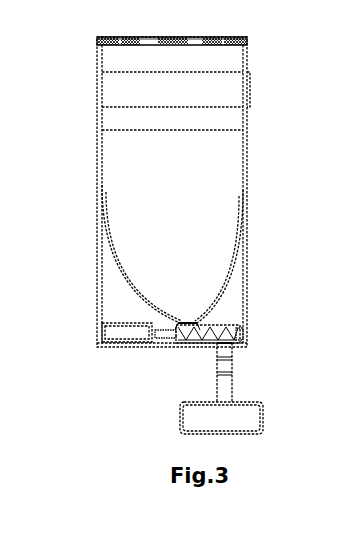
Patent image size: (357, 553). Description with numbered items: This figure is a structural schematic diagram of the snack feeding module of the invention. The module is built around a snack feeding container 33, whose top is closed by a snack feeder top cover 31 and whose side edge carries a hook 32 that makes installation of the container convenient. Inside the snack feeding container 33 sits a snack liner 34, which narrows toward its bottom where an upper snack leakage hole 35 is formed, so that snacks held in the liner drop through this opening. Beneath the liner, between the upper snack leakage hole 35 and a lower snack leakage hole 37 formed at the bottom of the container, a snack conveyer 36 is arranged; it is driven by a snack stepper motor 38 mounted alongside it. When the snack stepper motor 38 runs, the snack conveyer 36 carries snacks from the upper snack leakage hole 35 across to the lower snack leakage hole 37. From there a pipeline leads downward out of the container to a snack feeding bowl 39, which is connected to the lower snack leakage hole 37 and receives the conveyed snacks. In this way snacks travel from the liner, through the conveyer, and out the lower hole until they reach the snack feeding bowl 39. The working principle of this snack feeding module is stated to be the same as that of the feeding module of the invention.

The snack feeder top cover 31 is at (245, 48).
The hook 32 is at (248, 92).
The snack feeding container 33 is at (248, 163).
The snack liner 34 is at (222, 258).
The upper snack leakage hole 35 is at (197, 323).
The snack conveyer 36 is at (238, 342).
The lower snack leakage hole 37 is at (227, 353).
The snack stepper motor 38 is at (130, 328).
The snack feeding bowl 39 is at (195, 418).